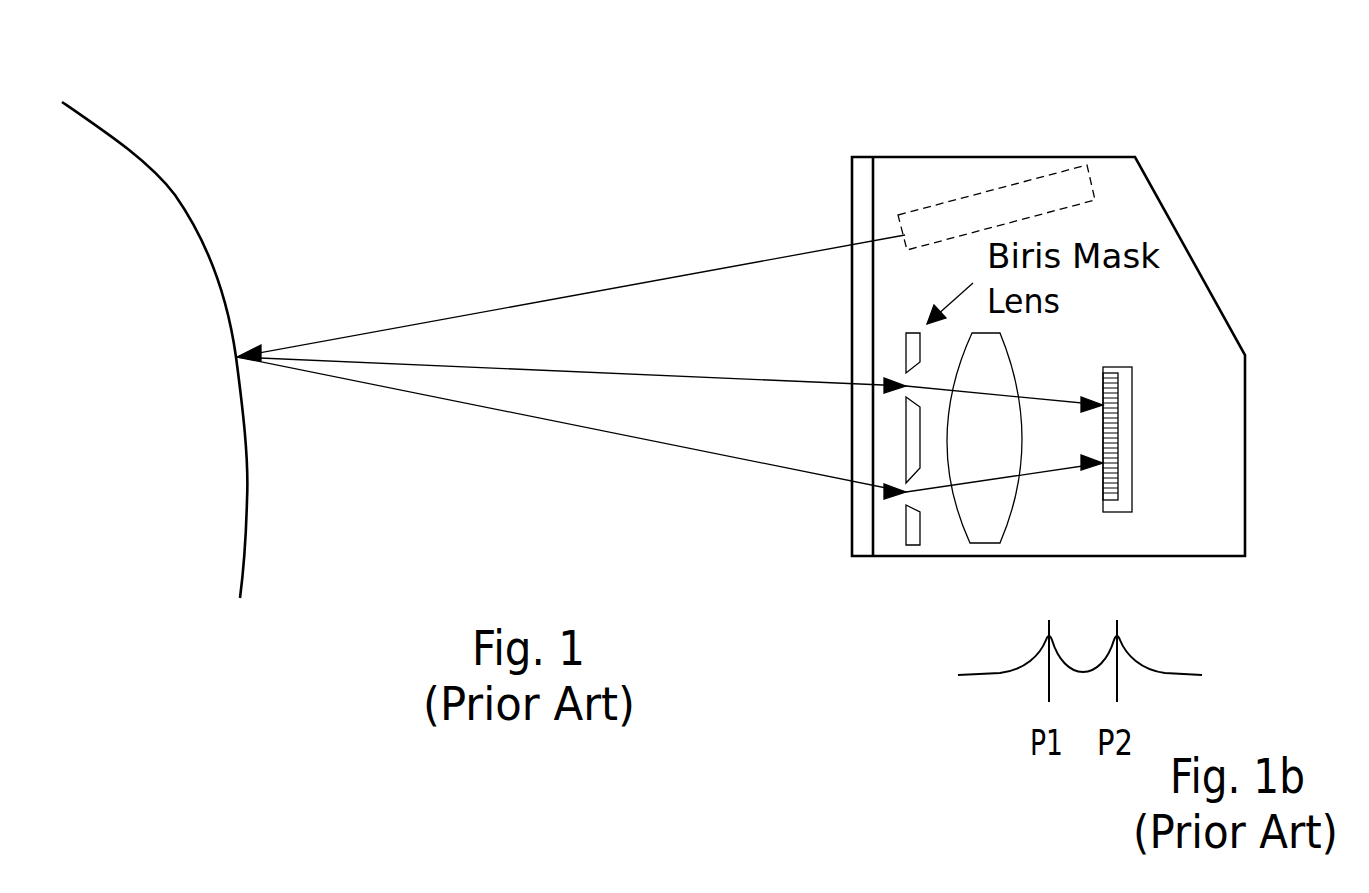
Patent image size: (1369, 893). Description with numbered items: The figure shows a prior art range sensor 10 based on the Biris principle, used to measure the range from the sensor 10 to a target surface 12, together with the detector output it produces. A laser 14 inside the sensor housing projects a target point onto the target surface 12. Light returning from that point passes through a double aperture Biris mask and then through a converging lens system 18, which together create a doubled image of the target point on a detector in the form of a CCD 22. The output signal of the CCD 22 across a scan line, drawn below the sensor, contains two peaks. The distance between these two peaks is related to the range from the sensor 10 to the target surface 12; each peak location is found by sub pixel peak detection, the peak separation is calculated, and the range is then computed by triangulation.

The range sensor 10 is at (863, 123).
The target surface 12 is at (162, 175).
The laser 14 is at (990, 192).
The converging lens system 18 is at (972, 528).
The CCD 22 is at (1120, 370).